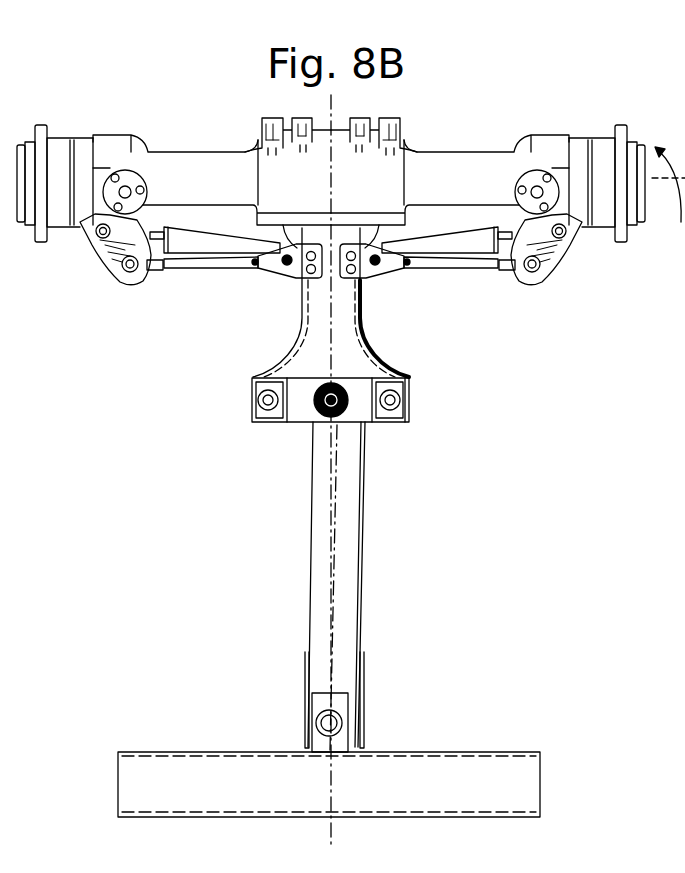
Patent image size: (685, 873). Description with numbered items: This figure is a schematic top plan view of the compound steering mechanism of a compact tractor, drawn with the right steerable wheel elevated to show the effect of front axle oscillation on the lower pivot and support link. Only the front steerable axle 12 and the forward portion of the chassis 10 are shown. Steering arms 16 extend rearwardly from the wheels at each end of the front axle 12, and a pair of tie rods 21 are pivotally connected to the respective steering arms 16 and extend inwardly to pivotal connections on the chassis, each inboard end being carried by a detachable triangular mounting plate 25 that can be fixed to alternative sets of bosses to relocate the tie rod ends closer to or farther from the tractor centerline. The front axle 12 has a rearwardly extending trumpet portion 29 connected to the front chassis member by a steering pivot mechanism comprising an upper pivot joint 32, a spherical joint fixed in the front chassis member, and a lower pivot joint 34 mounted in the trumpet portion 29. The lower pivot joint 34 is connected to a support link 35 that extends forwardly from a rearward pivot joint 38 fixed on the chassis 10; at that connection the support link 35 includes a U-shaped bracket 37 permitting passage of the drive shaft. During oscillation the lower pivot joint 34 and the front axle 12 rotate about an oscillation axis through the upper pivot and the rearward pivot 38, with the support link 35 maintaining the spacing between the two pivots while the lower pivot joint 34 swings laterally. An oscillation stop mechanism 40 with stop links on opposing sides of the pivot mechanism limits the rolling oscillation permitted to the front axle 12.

The tractor chassis 10 is at (208, 752).
The front steerable axle 12 is at (195, 150).
The steering arm 16 is at (110, 258).
The tie rod 21 is at (470, 268).
The triangular mounting plate 25 is at (285, 278).
The trumpet portion 29 is at (300, 334).
The upper pivot joint 32 is at (320, 410).
The lower pivot joint 34 is at (387, 353).
The support link 35 is at (366, 550).
The U-shaped bracket 37 is at (366, 686).
The rearward pivot joint 38 is at (340, 724).
The oscillation stop mechanism 40 is at (222, 393).